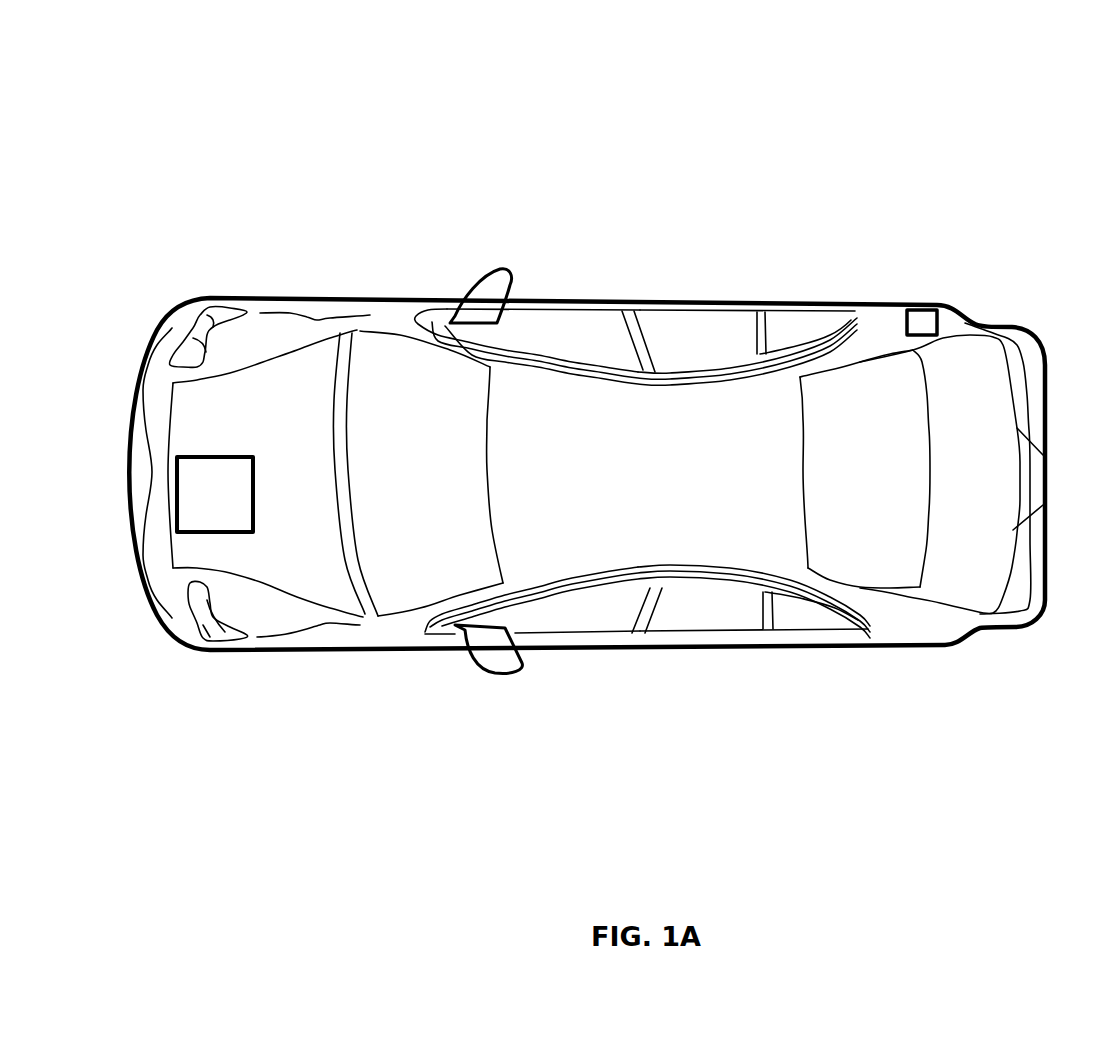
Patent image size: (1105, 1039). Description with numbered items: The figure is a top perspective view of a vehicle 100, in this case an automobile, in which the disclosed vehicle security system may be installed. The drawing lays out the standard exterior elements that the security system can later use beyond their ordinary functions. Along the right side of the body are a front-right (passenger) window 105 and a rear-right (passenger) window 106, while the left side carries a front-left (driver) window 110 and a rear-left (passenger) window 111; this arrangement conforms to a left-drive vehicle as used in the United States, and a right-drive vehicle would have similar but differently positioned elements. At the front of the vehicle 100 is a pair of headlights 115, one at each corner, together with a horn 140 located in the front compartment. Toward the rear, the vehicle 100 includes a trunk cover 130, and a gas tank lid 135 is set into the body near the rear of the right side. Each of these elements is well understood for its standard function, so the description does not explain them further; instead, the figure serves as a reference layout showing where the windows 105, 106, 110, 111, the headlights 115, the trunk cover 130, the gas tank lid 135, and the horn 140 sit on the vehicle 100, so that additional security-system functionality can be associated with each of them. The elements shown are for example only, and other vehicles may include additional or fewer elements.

The vehicle 100 is at (1062, 91).
The front-right (passenger) window 105 is at (556, 330).
The rear-right (passenger) window 106 is at (720, 338).
The front-left (driver) window 110 is at (567, 622).
The rear-left (passenger) window 111 is at (738, 603).
The headlights 115 is at (193, 768).
The trunk cover 130 is at (976, 551).
The gas tank lid 135 is at (931, 305).
The horn 140 is at (177, 490).